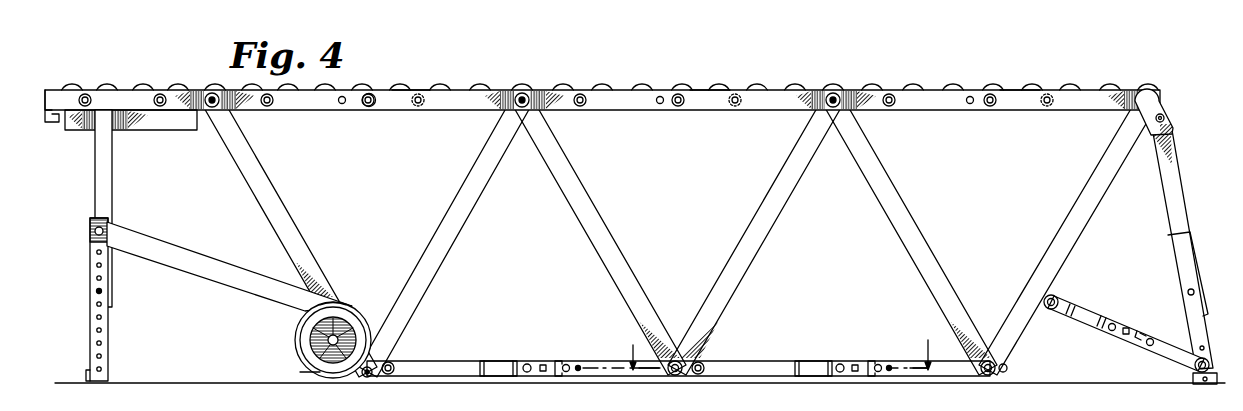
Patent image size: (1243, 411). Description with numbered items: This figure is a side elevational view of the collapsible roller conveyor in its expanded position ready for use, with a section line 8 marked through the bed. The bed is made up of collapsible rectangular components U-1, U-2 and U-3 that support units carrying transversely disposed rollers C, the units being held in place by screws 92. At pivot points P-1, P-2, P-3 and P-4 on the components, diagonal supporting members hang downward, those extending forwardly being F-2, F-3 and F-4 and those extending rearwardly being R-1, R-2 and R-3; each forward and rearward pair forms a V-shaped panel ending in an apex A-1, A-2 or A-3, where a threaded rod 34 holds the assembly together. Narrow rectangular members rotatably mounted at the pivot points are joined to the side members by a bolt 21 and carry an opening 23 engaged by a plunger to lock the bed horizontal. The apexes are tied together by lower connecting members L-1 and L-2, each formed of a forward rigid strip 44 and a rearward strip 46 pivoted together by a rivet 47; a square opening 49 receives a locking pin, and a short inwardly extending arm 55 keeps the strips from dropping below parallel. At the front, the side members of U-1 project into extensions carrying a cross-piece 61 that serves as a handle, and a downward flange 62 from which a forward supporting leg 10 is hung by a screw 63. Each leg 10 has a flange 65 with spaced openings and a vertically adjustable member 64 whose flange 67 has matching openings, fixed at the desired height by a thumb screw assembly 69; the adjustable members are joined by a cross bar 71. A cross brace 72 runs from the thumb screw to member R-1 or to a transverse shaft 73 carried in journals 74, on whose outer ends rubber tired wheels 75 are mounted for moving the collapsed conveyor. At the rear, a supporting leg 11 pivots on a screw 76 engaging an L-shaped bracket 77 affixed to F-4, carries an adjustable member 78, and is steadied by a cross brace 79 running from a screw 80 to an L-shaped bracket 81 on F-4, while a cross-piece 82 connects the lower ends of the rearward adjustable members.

The section line 8- 8 is at (633, 82).
The forward supporting legs 10 is at (72, 183).
The rearward supporting legs 11 is at (1186, 178).
The bolt 21 is at (370, 109).
The opening 23 is at (602, 117).
The rod 34 is at (384, 362).
The forward rigid strip 44 is at (449, 370).
The rearwardly disposed strip 46 is at (582, 373).
The rivet 47 is at (527, 373).
The square opening 49 is at (543, 362).
The inwardly extending arm 55 is at (566, 362).
The cross-piece 61 is at (59, 125).
The flange 62 is at (170, 124).
The screw 63 is at (107, 115).
The vertically adjustable member 64 is at (109, 327).
The flange 65 is at (110, 223).
The flange 67 is at (103, 353).
The thumb screw assembly 69 is at (94, 231).
The cross bar 71 is at (86, 377).
The cross brace 72 is at (182, 260).
The transverse shaft 73 is at (350, 312).
The journal 74 is at (318, 372).
The rubber tired wheel 75 is at (296, 332).
The bolt 76 is at (1166, 119).
The L-shaped bracket 77 is at (1166, 106).
The vertically adjustable member 78 is at (1178, 249).
The cross brace 79 is at (1093, 315).
The screw 80 is at (1194, 366).
The L-shaped bracket 81 is at (1058, 298).
The cross-piece 82 is at (1205, 386).
The screws 92 is at (267, 107).
The rollers C is at (436, 89).
The pivot point P-1 is at (214, 93).
The pivot point P-2 is at (522, 93).
The pivot point P-3 is at (836, 93).
The pivot point P-4 is at (1148, 93).
The rearwardly extending diagonal supporting member R-1 is at (262, 190).
The rearwardly extending diagonal supporting member R-2 is at (592, 218).
The rearwardly extending diagonal supporting member R-3 is at (905, 236).
The forwardly extending diagonal supporting member F-2 is at (446, 220).
The forwardly extending diagonal supporting member F-3 is at (772, 196).
The forwardly extending diagonal supporting member F-4 is at (1086, 200).
The collapsible rectangular component U-1 is at (412, 94).
The collapsible rectangular component U-2 is at (701, 94).
The collapsible rectangular component U-3 is at (1016, 94).
The lower connecting member L-1 is at (497, 360).
The lower connecting member L-2 is at (791, 360).
The apex A-1 is at (364, 378).
The apex A-2 is at (673, 378).
The apex A-3 is at (990, 380).